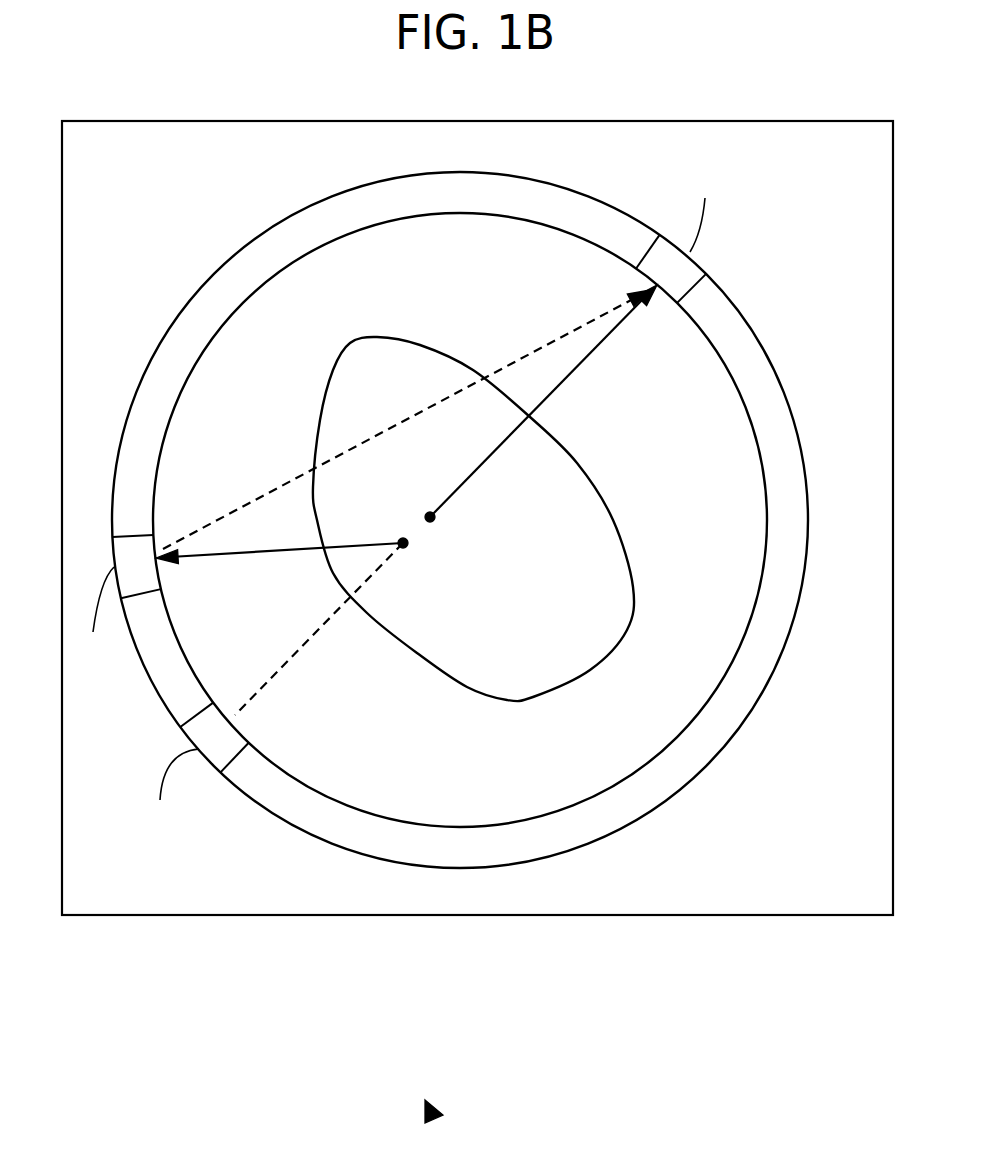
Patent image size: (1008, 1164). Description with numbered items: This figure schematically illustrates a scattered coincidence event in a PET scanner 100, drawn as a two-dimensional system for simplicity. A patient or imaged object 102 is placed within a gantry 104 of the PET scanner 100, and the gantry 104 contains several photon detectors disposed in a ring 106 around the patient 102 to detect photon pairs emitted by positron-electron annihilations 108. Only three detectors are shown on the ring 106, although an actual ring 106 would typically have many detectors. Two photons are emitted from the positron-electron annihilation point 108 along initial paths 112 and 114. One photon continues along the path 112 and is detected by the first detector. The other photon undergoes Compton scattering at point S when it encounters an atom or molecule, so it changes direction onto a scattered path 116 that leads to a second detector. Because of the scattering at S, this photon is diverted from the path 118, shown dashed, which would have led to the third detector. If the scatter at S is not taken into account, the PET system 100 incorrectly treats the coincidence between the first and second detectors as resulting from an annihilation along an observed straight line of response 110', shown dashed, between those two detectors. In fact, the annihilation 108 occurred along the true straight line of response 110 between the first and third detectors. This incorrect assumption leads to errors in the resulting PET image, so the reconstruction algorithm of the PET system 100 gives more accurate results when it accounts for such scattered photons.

The PET scanner 100 is at (434, 1116).
The imaged object 102 is at (610, 523).
The gantry 104 is at (117, 915).
The detector ring 106 is at (650, 808).
The positron-electron annihilation 108 is at (434, 520).
The line of response 110 is at (543, 401).
The observed straight line of response 110' is at (406, 401).
The initial path 112 is at (452, 492).
The initial path 114 is at (420, 530).
The scattered path 116 is at (303, 550).
The path 118 is at (340, 607).
The scattering point S is at (405, 547).